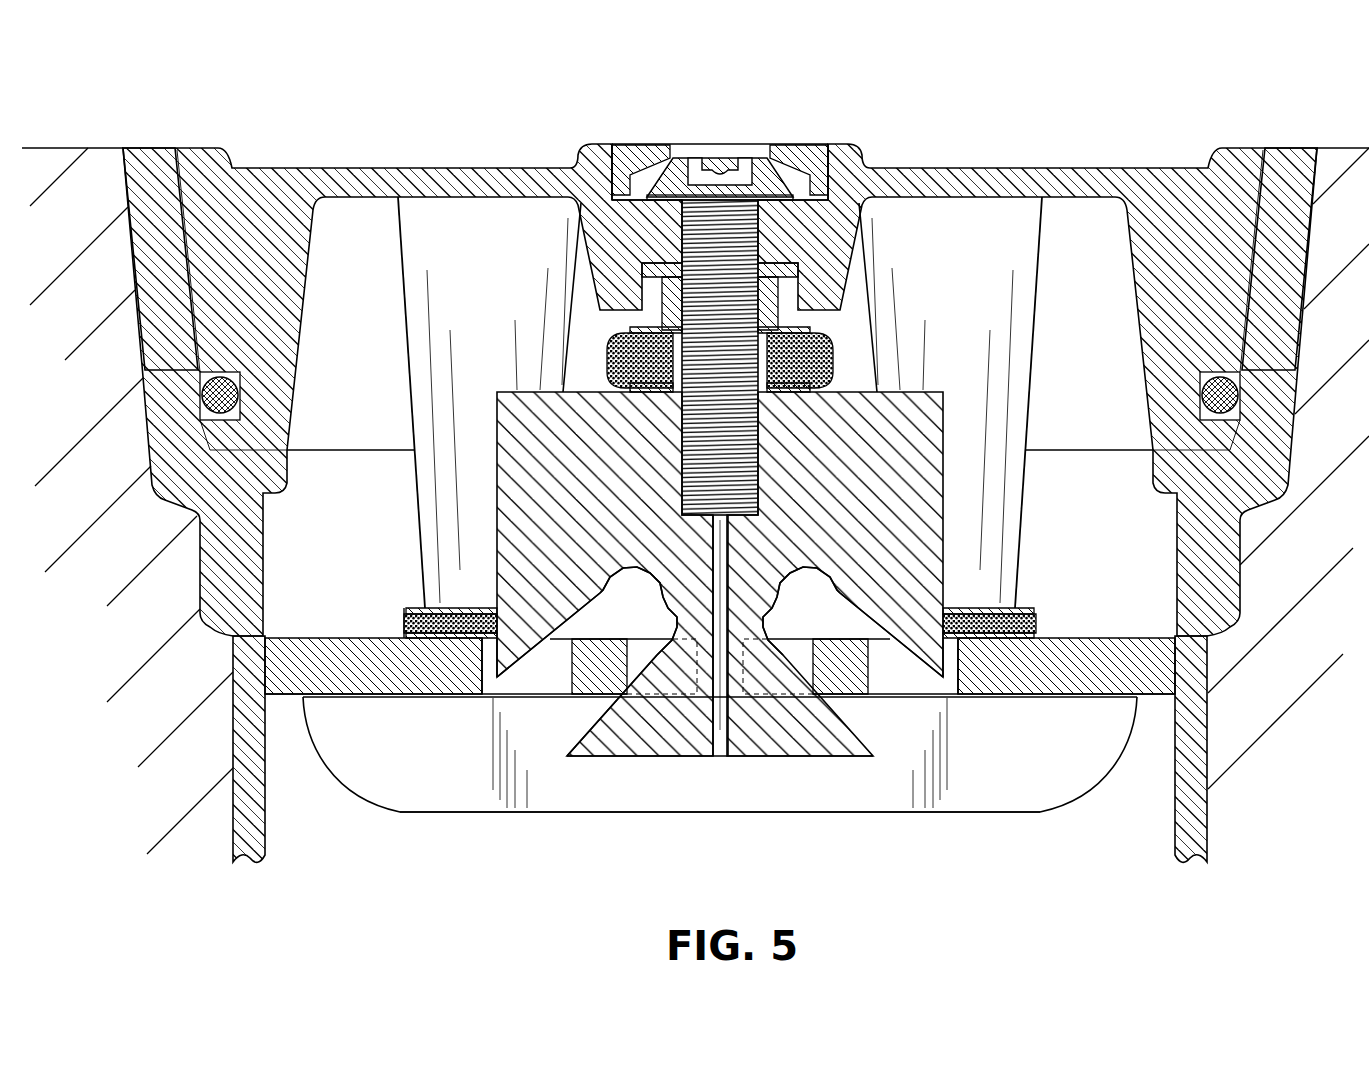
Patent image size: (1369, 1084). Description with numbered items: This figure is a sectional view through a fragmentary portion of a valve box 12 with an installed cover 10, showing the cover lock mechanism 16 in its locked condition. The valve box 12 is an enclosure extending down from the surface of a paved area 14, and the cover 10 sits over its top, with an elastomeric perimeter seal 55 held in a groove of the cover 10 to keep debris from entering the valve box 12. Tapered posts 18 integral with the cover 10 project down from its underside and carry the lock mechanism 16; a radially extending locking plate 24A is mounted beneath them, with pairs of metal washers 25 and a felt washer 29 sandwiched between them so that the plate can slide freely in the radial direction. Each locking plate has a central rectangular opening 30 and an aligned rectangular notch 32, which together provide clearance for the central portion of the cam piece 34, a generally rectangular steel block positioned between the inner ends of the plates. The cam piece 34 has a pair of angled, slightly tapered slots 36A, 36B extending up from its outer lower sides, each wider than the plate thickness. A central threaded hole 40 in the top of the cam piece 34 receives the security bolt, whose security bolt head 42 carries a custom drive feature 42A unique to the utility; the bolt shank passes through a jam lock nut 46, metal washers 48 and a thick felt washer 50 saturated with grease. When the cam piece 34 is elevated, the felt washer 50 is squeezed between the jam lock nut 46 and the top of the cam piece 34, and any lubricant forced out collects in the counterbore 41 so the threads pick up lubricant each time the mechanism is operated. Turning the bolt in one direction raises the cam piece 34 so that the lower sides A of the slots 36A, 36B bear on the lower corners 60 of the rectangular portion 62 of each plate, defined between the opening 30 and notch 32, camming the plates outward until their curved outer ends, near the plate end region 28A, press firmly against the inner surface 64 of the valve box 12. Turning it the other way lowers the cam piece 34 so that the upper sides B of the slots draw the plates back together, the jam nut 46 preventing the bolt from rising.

The cover 10 is at (488, 156).
The valve box 12 is at (1298, 142).
The paved area 14 is at (46, 142).
The cover lock mechanism 16 is at (930, 758).
The tapered posts 18 is at (440, 300).
The locking plate 24A is at (307, 700).
The metal washers 25 is at (418, 609).
The bowl bottom 28A is at (692, 797).
The felt washer 29 is at (405, 623).
The central rectangular opening 30 is at (418, 814).
The rectangular notch 32 is at (650, 658).
The cam piece 34 is at (950, 526).
The tapered slot 36A is at (593, 620).
The tapered slot 36B is at (1003, 607).
The central threaded hole 40 is at (680, 488).
The counterbore 41 is at (682, 397).
The security bolt head 42 is at (680, 162).
The head recess 42A is at (747, 165).
The jam lock nut 46 is at (775, 327).
The metal washers 48 is at (812, 390).
The thick felt washer 50 is at (603, 355).
The elastomeric perimeter seal 55 is at (224, 376).
The lower corners 60 is at (643, 660).
The rectangular portion 62 is at (615, 656).
The inner surface 64 is at (263, 595).
The lower sides A is at (583, 757).
The upper sides B is at (490, 696).